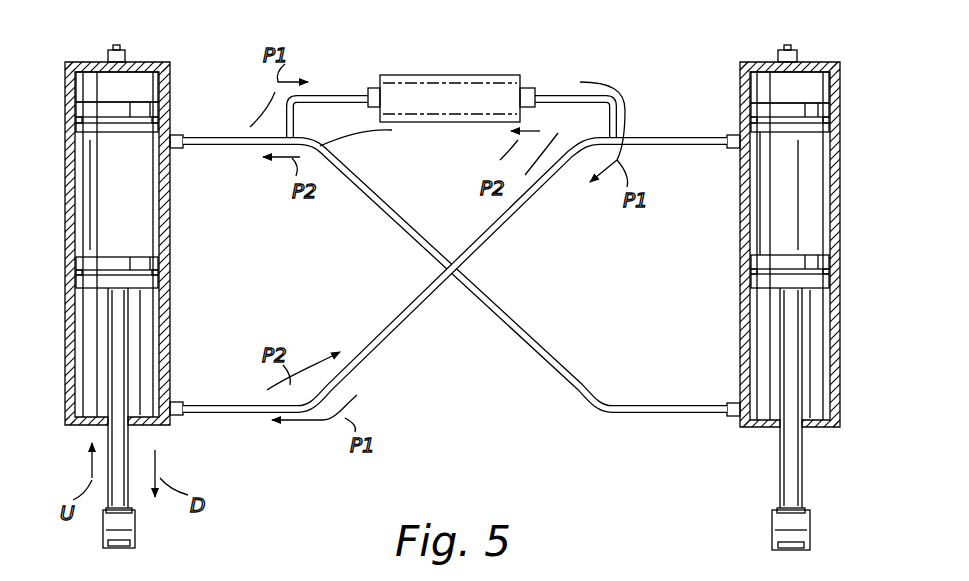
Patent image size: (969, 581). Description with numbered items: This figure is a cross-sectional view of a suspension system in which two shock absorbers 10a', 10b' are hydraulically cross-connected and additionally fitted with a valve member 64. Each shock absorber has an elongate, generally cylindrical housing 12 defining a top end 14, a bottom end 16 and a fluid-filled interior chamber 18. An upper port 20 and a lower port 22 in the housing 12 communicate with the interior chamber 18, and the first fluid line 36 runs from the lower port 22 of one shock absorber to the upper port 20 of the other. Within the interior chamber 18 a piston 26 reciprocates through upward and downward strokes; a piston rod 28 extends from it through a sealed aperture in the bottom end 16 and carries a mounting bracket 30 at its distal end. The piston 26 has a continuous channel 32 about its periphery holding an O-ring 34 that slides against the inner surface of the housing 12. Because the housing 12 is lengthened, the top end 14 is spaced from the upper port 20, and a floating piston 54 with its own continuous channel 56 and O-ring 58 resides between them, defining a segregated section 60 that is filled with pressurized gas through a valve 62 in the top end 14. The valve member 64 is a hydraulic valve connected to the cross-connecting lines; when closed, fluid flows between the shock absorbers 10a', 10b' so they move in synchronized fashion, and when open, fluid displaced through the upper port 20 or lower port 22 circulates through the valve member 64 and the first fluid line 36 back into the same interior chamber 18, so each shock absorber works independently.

The shock absorber 10a' is at (151, 218).
The shock absorber 10b' is at (806, 219).
The housing 12 is at (730, 250).
The top end 14 is at (90, 57).
The bottom end 16 is at (162, 435).
The interior chamber 18 is at (143, 317).
The upper port 20 is at (180, 148).
The lower port 22 is at (176, 398).
The piston 26 is at (150, 255).
The piston rod 28 is at (125, 357).
The mounting bracket 30 is at (123, 533).
The continuous channel 32 is at (450, 195).
The O-ring 34 is at (165, 271).
The first fluid line 36 is at (518, 212).
The floating piston 54 is at (130, 105).
The continuous channel 56 is at (787, 118).
The O-ring 58 is at (157, 119).
The segregated section 60 is at (143, 85).
The valve 62 is at (125, 52).
The valve member 64 is at (471, 72).